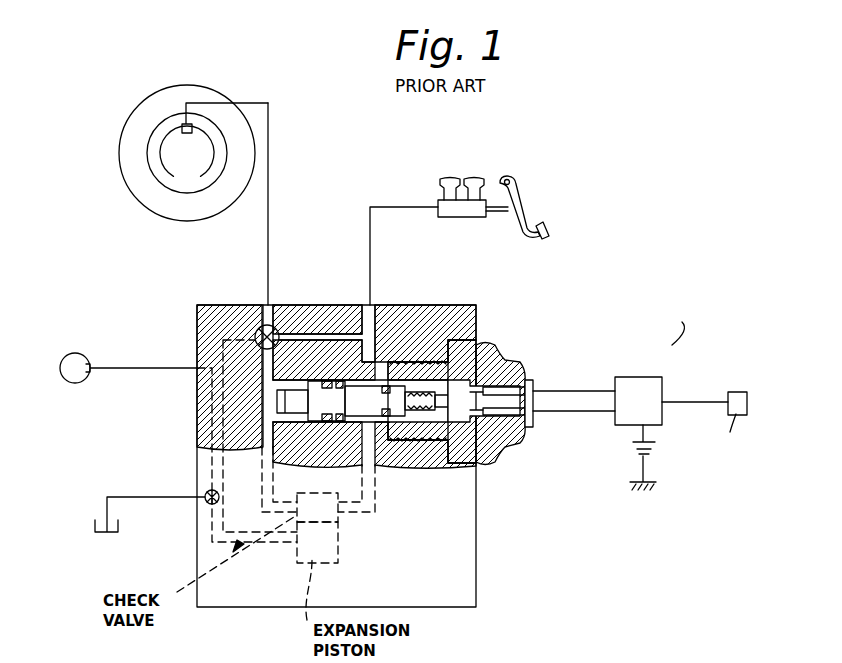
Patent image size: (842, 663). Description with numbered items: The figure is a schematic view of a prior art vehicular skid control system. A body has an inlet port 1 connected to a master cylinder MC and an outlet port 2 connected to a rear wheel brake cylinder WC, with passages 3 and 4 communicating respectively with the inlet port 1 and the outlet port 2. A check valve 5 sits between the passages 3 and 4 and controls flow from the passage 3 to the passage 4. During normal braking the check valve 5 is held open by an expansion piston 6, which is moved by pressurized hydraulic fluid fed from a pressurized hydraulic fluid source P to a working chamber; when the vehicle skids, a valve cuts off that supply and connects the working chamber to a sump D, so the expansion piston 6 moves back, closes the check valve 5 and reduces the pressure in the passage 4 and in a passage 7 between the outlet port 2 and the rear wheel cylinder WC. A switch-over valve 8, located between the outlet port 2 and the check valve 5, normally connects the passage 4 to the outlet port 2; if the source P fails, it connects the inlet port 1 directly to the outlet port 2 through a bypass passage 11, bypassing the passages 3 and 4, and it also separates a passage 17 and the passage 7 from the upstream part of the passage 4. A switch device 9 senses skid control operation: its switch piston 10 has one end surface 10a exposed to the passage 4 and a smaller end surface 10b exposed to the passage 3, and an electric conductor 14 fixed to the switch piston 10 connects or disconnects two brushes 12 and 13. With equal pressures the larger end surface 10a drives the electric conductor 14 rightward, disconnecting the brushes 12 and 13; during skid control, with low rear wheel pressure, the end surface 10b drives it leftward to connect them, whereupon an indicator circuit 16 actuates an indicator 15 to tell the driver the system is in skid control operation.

The inlet port 1 is at (368, 322).
The outlet port 2 is at (267, 313).
The passage 3 is at (388, 335).
The passage 4 is at (262, 358).
The check valve 5 is at (339, 514).
The expansion piston 6 is at (339, 546).
The passage 7 is at (265, 268).
The switch-over valve 8 is at (283, 331).
The switch device 9 is at (503, 339).
The switch piston 10 is at (337, 383).
The end surface 10a is at (286, 466).
The end surface 10b is at (349, 478).
The bypass passage 11 is at (336, 352).
The brush 12 is at (518, 373).
The brush 13 is at (524, 428).
The electric conductor 14 is at (437, 422).
The indicator 15 is at (741, 395).
The indicator circuit 16 is at (647, 378).
The passage 17 is at (411, 207).
The rear wheel brake cylinder WC is at (184, 124).
The master cylinder MC is at (476, 178).
The pressurized hydraulic fluid source P is at (77, 353).
The sump D is at (139, 492).